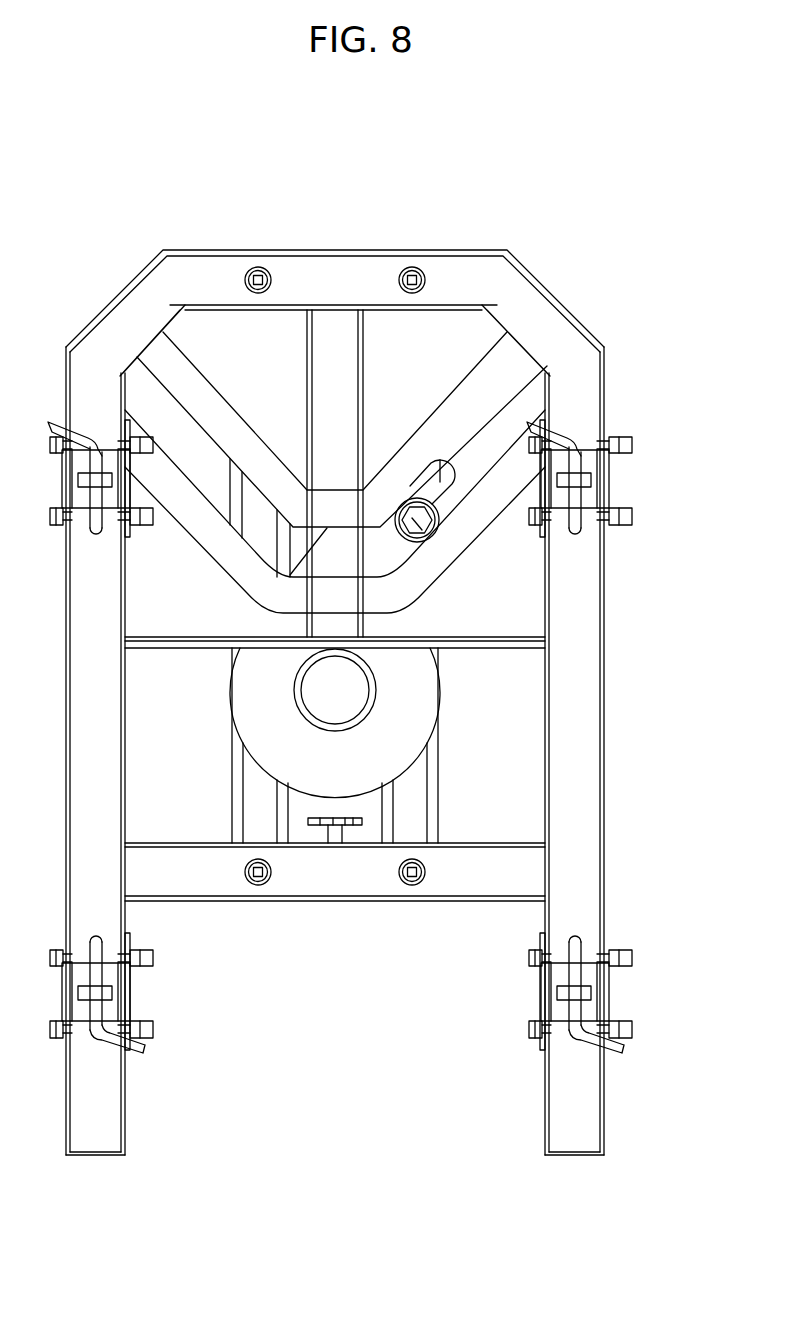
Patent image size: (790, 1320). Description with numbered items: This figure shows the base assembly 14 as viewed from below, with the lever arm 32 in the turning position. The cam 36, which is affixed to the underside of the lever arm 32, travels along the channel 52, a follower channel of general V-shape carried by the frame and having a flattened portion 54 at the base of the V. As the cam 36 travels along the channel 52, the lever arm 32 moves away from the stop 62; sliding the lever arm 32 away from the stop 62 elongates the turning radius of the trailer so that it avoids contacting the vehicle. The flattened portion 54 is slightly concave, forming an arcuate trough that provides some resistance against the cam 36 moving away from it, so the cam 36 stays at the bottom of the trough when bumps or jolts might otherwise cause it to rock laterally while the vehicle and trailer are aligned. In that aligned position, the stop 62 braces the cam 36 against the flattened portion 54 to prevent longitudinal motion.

The base assembly 14 is at (327, 969).
The lever arm 32 is at (425, 693).
The cam 36 is at (436, 532).
The channel 52 is at (545, 397).
The flattened portion 54 is at (332, 480).
The stop 62 is at (395, 815).